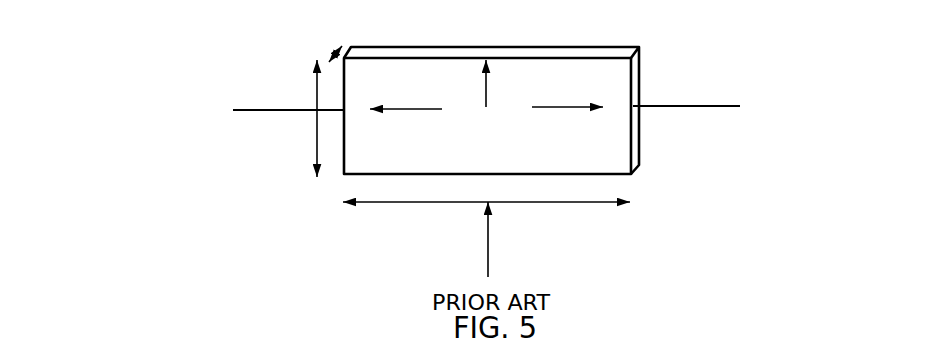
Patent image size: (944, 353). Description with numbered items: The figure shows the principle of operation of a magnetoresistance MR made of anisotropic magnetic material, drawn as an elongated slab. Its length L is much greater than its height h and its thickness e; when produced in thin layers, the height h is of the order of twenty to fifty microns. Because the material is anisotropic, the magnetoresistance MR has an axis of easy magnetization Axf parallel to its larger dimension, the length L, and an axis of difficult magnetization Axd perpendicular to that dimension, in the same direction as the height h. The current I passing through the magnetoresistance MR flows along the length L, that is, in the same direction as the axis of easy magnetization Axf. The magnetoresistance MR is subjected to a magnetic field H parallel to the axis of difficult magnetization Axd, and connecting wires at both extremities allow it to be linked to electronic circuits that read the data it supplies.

The magnetoresistance MR is at (588, 50).
The thickness e is at (330, 50).
The height h is at (306, 118).
The axis of difficult magnetization Axd is at (508, 83).
The axis of easy magnetization Axf is at (406, 132).
The current I is at (567, 121).
The length L is at (486, 191).
The magnetic field H is at (521, 239).